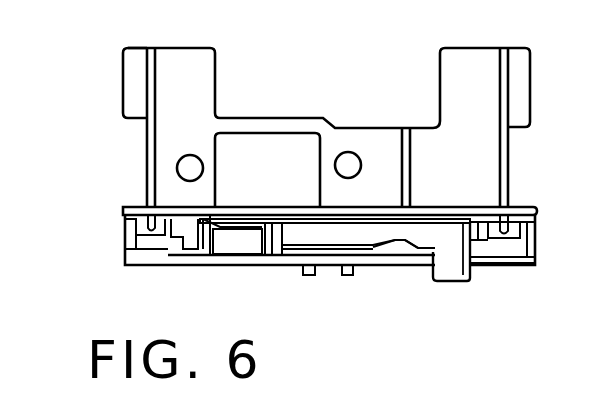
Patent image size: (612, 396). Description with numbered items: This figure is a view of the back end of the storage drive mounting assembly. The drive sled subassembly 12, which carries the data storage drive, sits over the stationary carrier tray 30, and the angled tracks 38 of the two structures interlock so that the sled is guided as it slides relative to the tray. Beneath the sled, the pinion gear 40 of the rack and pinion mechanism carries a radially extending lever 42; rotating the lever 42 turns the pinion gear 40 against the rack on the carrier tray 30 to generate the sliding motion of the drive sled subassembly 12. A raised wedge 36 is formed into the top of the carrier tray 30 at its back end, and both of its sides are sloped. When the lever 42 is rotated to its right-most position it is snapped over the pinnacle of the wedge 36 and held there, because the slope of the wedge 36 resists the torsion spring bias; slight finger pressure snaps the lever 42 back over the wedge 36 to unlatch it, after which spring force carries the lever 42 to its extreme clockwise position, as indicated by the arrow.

The drive sled subassembly 12 is at (126, 151).
The carrier tray 30 is at (208, 255).
The raised wedge 36 is at (417, 248).
The angled tracks 38 is at (181, 217).
The pinion gear 40 is at (302, 240).
The lever 42 is at (453, 282).